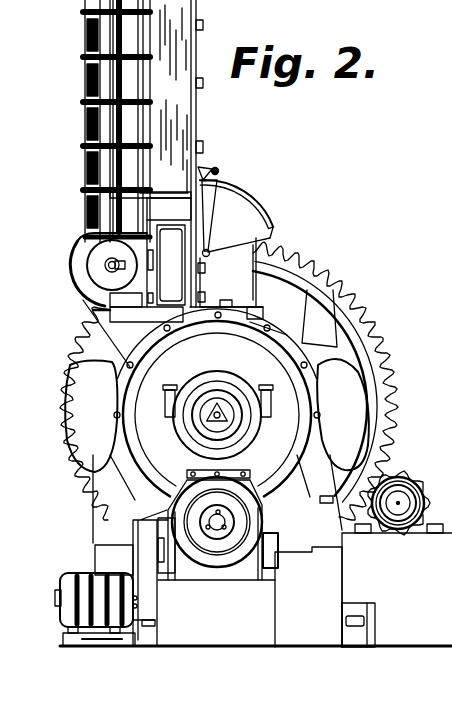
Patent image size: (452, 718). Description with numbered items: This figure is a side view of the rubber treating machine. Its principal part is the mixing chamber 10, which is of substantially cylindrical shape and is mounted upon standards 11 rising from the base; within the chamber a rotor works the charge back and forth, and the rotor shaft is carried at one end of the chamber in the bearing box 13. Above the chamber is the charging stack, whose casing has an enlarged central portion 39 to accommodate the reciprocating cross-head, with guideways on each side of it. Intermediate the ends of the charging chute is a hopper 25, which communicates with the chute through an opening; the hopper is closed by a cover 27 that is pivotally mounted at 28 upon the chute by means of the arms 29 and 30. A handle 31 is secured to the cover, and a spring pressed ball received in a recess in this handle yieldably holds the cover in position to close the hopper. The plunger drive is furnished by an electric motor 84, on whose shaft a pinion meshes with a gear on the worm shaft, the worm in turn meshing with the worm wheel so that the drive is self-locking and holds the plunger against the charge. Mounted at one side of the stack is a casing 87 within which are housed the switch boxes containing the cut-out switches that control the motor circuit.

The mixing chamber 10 is at (290, 312).
The standards 11 is at (321, 584).
The bearing box 13 is at (220, 387).
The hopper 25 is at (238, 222).
The cover 27 is at (257, 198).
The pivot 28 is at (207, 257).
The arm 29 is at (243, 238).
The arm 30 is at (212, 210).
The handle 31 is at (218, 169).
The enlarged central portion 39 is at (85, 146).
The electric motor 84 is at (118, 278).
The casing 87 is at (175, 113).